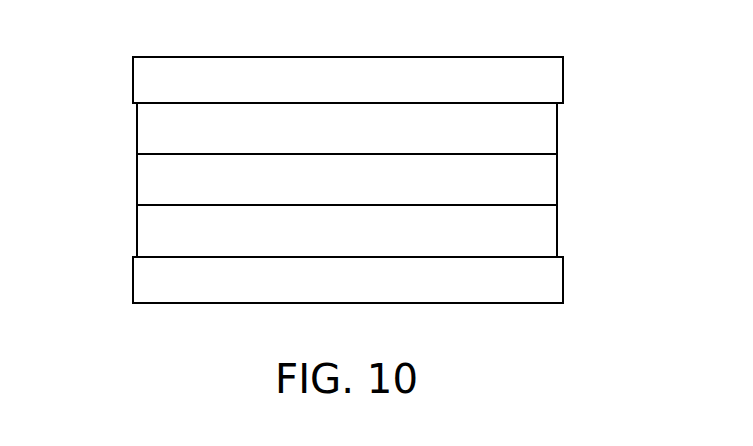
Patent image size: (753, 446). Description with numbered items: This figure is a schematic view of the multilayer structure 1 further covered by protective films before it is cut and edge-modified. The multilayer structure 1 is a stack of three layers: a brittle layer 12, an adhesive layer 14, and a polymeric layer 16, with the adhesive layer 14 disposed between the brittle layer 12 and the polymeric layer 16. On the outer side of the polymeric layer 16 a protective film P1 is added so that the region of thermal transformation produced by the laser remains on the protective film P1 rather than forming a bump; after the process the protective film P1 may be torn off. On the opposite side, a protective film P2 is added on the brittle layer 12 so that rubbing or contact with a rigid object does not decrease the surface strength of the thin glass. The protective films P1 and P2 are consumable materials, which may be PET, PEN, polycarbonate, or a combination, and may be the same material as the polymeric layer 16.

The multilayer structure 1 is at (295, 180).
The brittle layer 12 is at (307, 231).
The adhesive layer 14 is at (150, 186).
The polymeric layer 16 is at (150, 127).
The protective film P1 is at (549, 82).
The protective film P2 is at (547, 280).